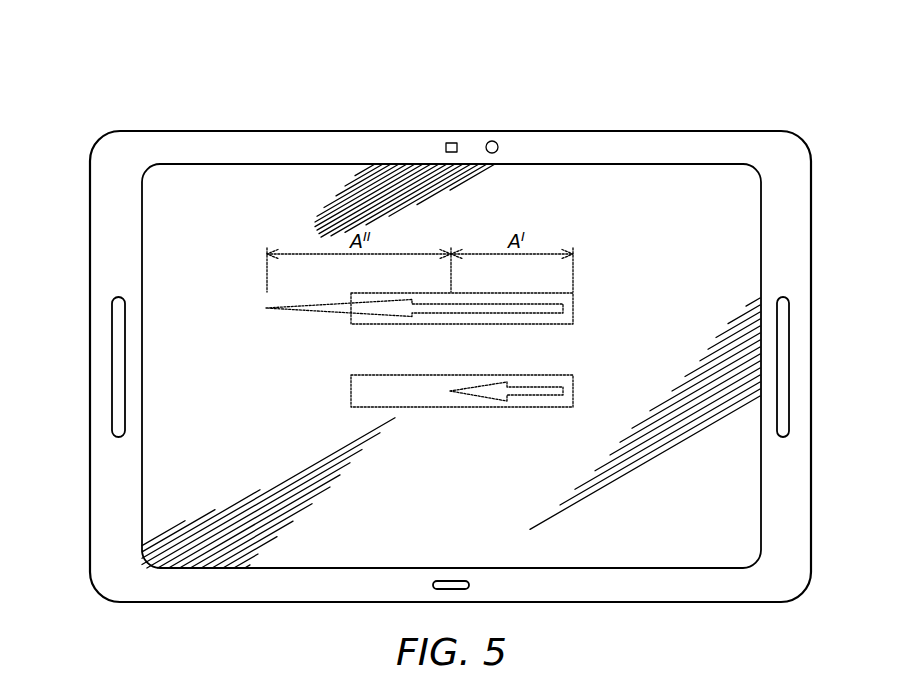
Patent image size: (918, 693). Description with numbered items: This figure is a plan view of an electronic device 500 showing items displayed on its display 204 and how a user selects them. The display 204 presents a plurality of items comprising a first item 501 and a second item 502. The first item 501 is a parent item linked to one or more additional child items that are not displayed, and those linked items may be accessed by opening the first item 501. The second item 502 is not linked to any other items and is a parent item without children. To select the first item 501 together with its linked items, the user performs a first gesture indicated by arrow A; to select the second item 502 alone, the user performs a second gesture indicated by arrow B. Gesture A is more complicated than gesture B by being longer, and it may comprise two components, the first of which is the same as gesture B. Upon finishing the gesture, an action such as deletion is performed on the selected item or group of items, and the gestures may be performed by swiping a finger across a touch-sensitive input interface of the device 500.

The electronic device 500 is at (95, 121).
The display 204 is at (608, 176).
The first item 501 is at (575, 307).
The second item 502 is at (575, 390).
The arrow A (first gesture) A is at (400, 314).
The arrow B (second gesture) B is at (497, 397).